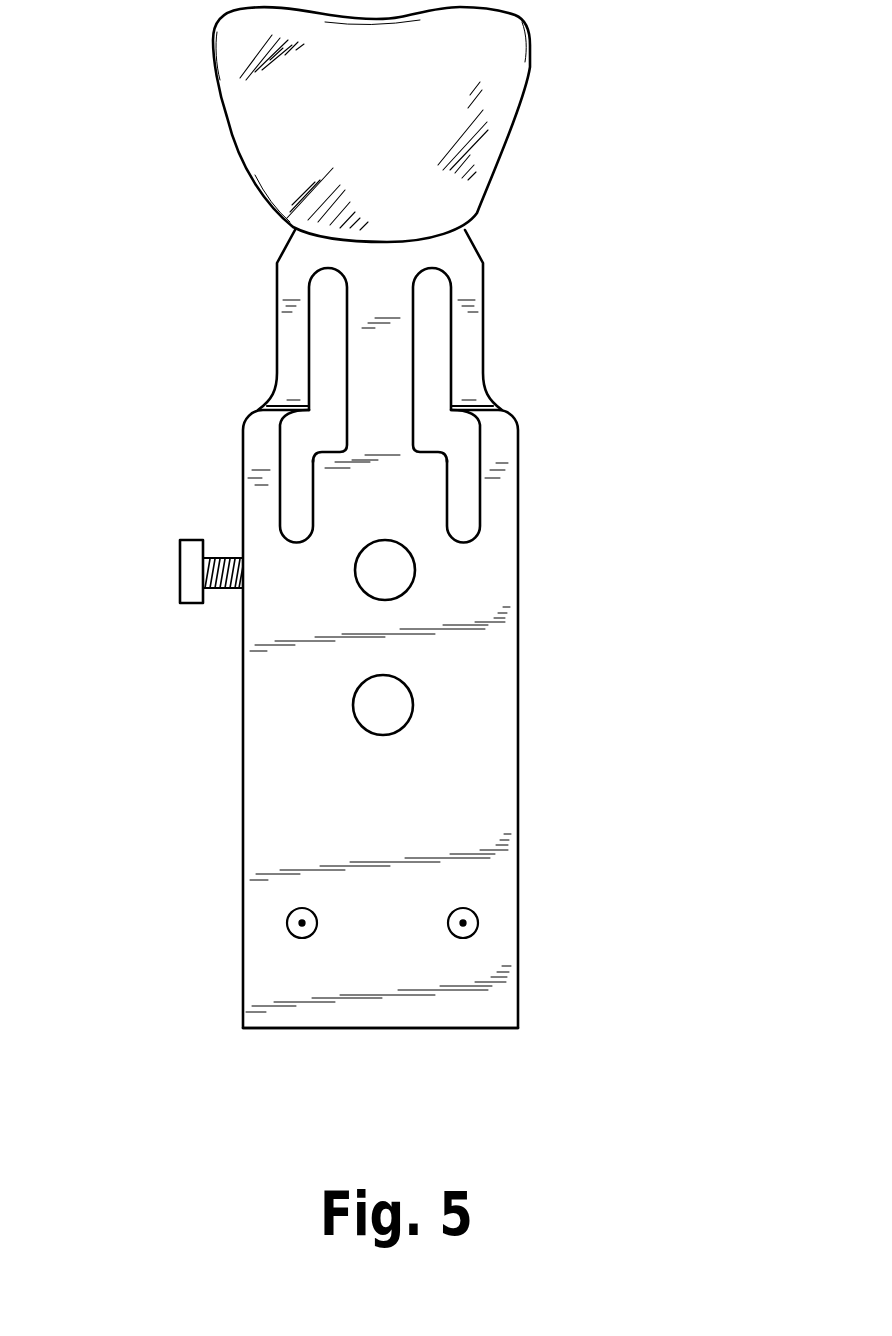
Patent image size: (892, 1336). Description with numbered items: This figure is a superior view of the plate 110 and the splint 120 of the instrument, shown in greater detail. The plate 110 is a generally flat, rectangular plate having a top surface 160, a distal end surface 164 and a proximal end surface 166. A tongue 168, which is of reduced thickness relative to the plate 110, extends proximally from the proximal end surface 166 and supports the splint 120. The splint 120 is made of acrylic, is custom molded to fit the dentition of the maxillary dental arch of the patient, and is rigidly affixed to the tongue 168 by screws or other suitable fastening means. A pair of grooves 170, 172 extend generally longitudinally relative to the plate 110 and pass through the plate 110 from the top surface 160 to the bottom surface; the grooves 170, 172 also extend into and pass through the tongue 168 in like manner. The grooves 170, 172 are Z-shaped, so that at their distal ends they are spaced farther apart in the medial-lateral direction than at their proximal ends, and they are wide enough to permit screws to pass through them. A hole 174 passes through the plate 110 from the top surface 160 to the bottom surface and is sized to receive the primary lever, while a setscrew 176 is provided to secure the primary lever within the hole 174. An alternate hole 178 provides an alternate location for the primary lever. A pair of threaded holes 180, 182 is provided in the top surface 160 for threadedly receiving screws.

The plate 110 is at (557, 722).
The splint 120 is at (507, 143).
The top surface 160 is at (485, 835).
The distal end surface 164 is at (500, 1030).
The proximal end surface 166 is at (480, 378).
The tongue 168 is at (482, 298).
The groove 170 is at (478, 459).
The groove 172 is at (283, 440).
The hole 174 is at (415, 579).
The setscrew 176 is at (188, 603).
The alternate hole 178 is at (355, 722).
The threaded hole 180 is at (287, 928).
The threaded hole 182 is at (478, 923).